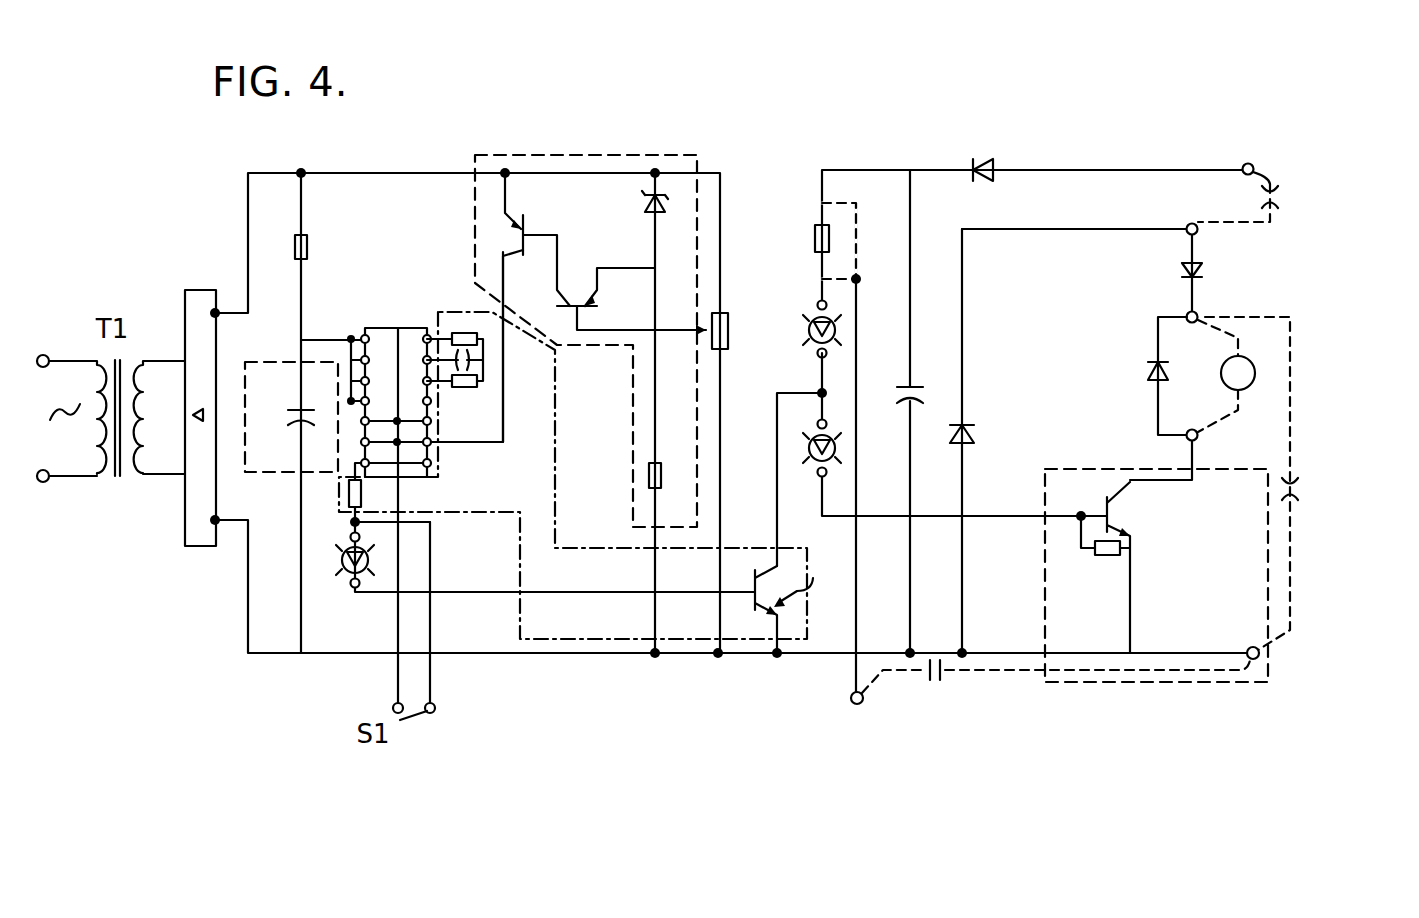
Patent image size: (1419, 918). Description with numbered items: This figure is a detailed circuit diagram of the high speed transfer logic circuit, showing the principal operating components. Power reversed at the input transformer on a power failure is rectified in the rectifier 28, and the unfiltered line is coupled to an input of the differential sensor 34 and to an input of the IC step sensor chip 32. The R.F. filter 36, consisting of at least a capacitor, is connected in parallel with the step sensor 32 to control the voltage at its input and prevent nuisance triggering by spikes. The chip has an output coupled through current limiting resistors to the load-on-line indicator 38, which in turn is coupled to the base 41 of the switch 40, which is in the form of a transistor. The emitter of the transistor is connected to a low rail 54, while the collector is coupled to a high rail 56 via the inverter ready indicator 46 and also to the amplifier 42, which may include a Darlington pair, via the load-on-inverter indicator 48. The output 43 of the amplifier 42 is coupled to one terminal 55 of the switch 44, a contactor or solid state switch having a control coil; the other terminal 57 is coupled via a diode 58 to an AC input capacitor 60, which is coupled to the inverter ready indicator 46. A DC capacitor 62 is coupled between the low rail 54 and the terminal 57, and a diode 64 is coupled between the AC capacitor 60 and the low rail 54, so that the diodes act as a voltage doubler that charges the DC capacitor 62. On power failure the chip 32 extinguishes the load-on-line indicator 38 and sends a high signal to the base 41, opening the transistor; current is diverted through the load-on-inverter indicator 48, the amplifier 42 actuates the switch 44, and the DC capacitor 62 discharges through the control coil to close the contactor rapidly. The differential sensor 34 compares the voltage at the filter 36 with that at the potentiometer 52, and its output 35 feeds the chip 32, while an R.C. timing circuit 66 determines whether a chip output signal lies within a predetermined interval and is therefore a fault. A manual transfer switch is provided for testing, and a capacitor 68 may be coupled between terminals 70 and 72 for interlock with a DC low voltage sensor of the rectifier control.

The rectifier 28 is at (207, 283).
The step sensor 32 is at (366, 327).
The differential sensor 34 is at (474, 148).
The output 35 is at (504, 412).
The R.F. filter 36 is at (278, 364).
The load-on-line indicator 38 is at (340, 572).
The switch 40 is at (750, 615).
The base 41 is at (737, 586).
The amplifier switch control 42 is at (1083, 685).
The output 43 is at (1188, 450).
The switch 44 is at (1130, 385).
The inverter ready indicator 46 is at (808, 331).
The load-on-inverter indicator 48 is at (808, 480).
The potentiometer 52 is at (728, 323).
The low rail 54 is at (742, 656).
The terminal 55 is at (1205, 430).
The high rail 56 is at (821, 170).
The terminal 57 is at (1187, 312).
The diode 58 is at (1204, 273).
The AC input capacitor 60 is at (1292, 179).
The DC capacitor 62 is at (1304, 480).
The diode 64 is at (979, 420).
The R.C. timing circuit 66 is at (463, 392).
The capacitor 68 is at (935, 687).
The terminal 70 is at (860, 705).
The terminal 72 is at (1262, 656).